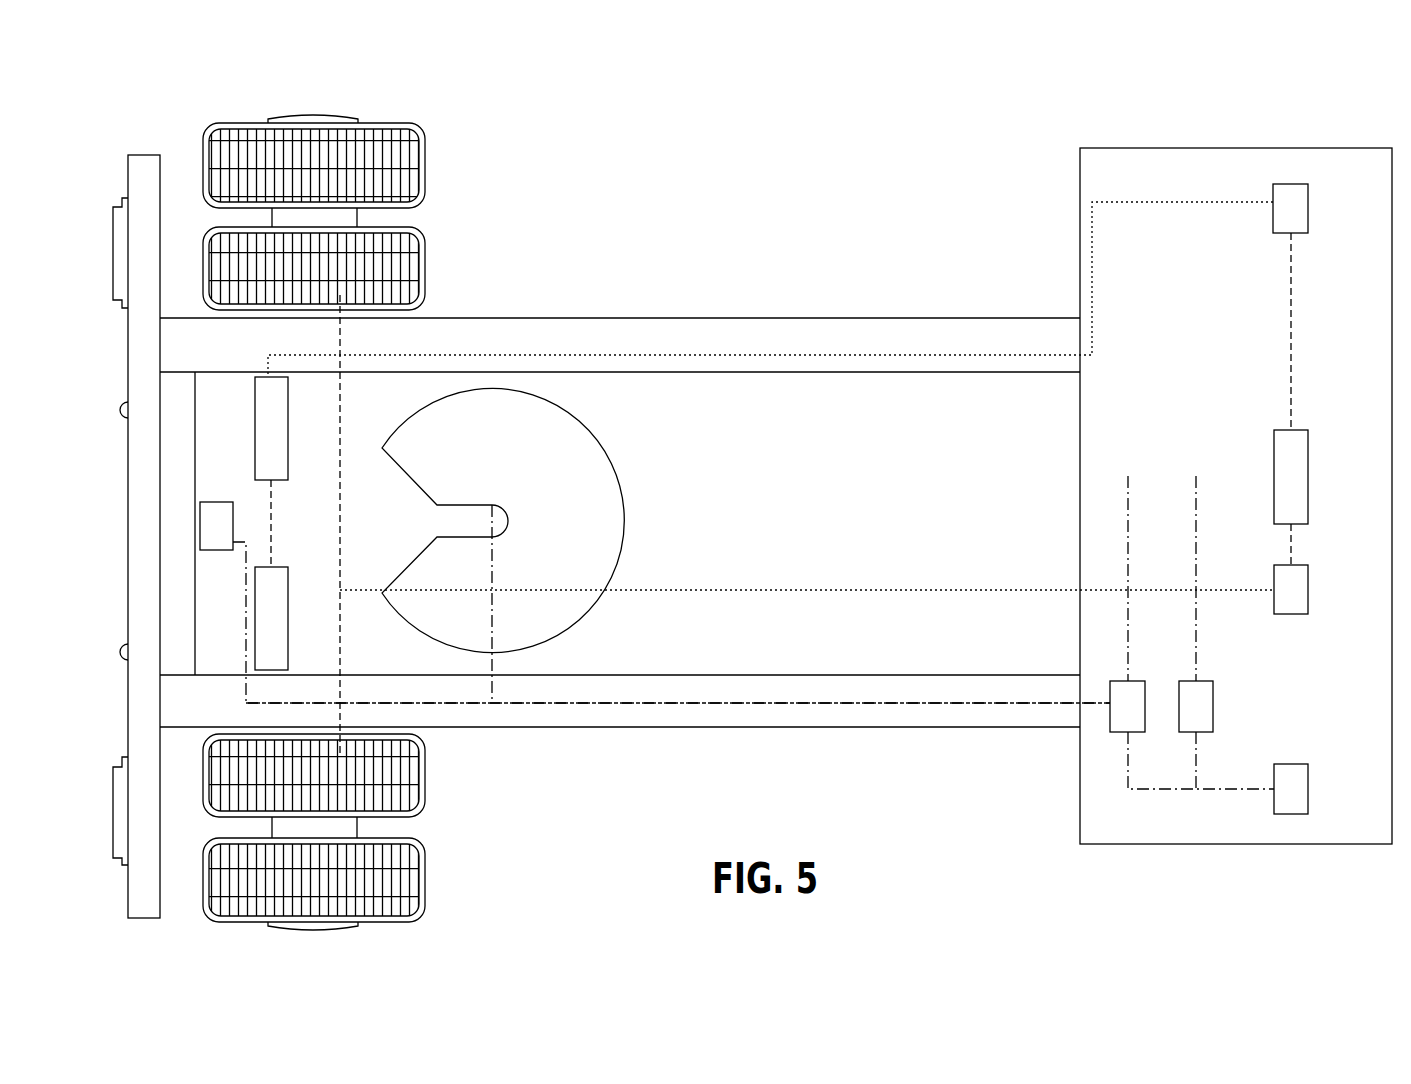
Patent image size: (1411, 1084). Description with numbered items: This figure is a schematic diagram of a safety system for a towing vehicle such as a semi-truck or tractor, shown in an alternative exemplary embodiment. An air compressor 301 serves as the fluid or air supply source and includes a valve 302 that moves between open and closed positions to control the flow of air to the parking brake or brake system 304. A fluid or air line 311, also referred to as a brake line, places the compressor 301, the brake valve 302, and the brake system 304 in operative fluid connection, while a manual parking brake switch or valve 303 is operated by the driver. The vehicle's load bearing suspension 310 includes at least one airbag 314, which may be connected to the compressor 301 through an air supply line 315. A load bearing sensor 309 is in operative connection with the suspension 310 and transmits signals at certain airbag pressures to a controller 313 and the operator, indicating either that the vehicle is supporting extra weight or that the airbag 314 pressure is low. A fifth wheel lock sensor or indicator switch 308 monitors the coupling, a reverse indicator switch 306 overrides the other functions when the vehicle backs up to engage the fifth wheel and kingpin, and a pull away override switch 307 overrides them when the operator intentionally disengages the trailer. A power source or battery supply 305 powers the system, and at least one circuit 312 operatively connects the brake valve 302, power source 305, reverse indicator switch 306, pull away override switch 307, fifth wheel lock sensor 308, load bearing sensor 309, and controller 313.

The air compressor 301 is at (1290, 208).
The valve 302 is at (1218, 555).
The controller 313 is at (1218, 555).
The manual parking brake switch 303 is at (824, 589).
The brake system 304 is at (314, 522).
The power source 305 is at (1291, 789).
The reverse indicator switch 306 is at (1196, 735).
The pull away override switch 307 is at (1192, 735).
The fifth wheel lock sensor 308 is at (1274, 476).
The load bearing sensor 309 is at (655, 602).
The load bearing suspension 310 is at (271, 523).
The airbag 314 is at (271, 523).
The air line 311 is at (1295, 308).
The circuit 312 is at (928, 703).
The air supply line 315 is at (1190, 200).